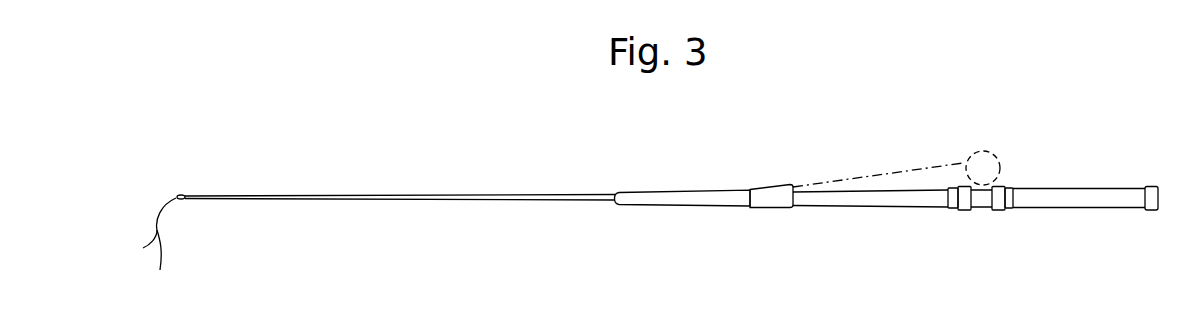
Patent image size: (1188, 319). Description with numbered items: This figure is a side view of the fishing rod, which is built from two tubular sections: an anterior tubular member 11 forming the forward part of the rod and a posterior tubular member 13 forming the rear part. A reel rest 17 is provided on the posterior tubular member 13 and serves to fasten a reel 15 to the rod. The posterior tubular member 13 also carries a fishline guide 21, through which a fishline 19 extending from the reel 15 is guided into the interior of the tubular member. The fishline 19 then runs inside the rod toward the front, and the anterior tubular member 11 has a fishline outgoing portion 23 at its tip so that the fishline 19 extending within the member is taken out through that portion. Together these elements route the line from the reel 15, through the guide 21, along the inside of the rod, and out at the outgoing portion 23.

The anterior tubular member 11 is at (412, 195).
The posterior tubular member 13 is at (657, 193).
The reel 15 is at (979, 150).
The reel rest 17 is at (978, 232).
The fishline 19 is at (885, 173).
The fishline guide 21 is at (769, 167).
The fishline outgoing portion 23 is at (178, 194).